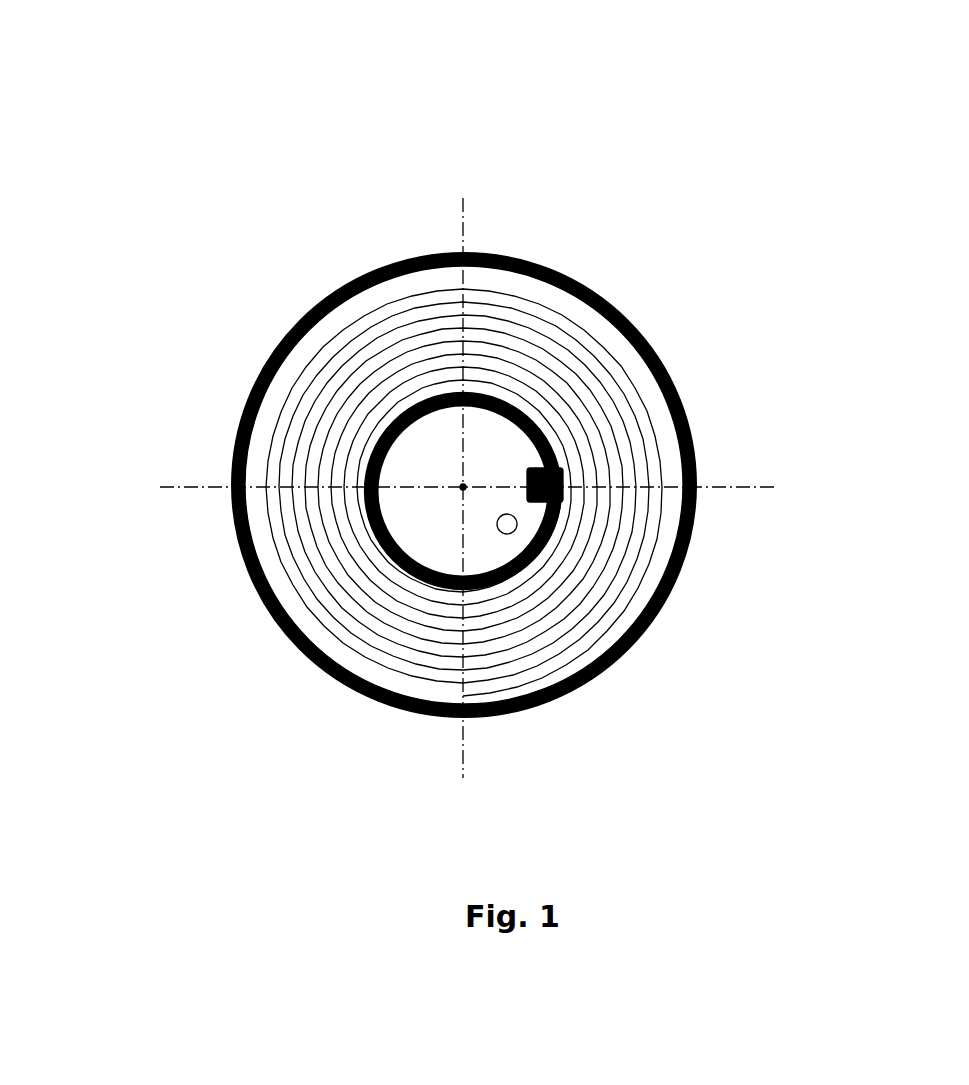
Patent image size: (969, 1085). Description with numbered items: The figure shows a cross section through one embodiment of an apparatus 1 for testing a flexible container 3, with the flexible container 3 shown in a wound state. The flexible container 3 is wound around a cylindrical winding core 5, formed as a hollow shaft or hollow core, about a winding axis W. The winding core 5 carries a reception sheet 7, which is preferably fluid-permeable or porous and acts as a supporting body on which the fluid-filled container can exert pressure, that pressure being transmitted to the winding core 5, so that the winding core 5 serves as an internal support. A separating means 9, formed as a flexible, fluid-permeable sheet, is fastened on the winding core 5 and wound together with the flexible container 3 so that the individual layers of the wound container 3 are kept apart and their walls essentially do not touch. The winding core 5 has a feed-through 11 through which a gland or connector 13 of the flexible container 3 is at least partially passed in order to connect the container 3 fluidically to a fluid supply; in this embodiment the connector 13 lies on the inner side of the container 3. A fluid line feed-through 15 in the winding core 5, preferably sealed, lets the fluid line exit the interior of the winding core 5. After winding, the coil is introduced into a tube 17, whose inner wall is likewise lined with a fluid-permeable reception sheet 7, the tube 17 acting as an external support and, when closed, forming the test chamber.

The apparatus 1 is at (695, 76).
The flexible container 3 is at (393, 305).
The winding core 5 is at (385, 537).
The reception sheet 7 is at (402, 407).
The separating means 9 is at (580, 640).
The feed-through 11 is at (560, 505).
The connector 13 is at (563, 488).
The fluid line feed-through 15 is at (498, 531).
The tube 17 is at (610, 300).